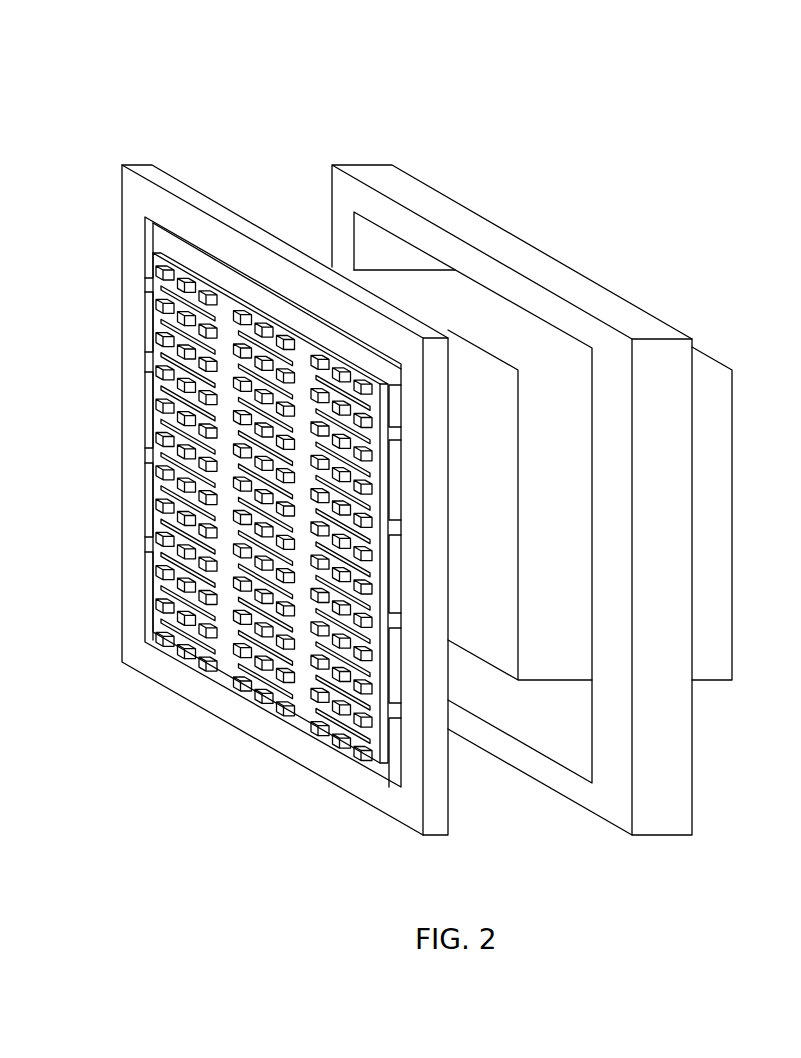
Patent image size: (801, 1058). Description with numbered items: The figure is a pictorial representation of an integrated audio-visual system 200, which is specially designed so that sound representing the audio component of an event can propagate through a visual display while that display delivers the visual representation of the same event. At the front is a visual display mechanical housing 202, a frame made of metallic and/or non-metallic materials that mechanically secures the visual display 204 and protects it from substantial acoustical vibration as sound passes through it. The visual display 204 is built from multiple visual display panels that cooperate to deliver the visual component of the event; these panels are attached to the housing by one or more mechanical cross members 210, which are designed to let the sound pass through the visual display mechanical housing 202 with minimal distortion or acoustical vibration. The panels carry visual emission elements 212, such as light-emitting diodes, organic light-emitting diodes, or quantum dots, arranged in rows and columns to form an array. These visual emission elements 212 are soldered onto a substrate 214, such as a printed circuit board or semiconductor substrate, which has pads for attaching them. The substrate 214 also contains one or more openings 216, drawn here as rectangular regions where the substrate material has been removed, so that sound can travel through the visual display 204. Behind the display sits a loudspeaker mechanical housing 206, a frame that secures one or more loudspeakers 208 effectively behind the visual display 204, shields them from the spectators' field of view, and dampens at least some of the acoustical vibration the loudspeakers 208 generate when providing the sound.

The integrated audio-visual system 200 is at (752, 97).
The visual display mechanical housing 202 is at (163, 184).
The visual display 204 is at (137, 379).
The loudspeaker mechanical housing 206 is at (676, 501).
The loudspeakers 208 is at (709, 355).
The mechanical cross members 210 is at (398, 433).
The visual emission elements 212 is at (147, 267).
The substrate 214 is at (146, 250).
The openings 216 is at (152, 348).